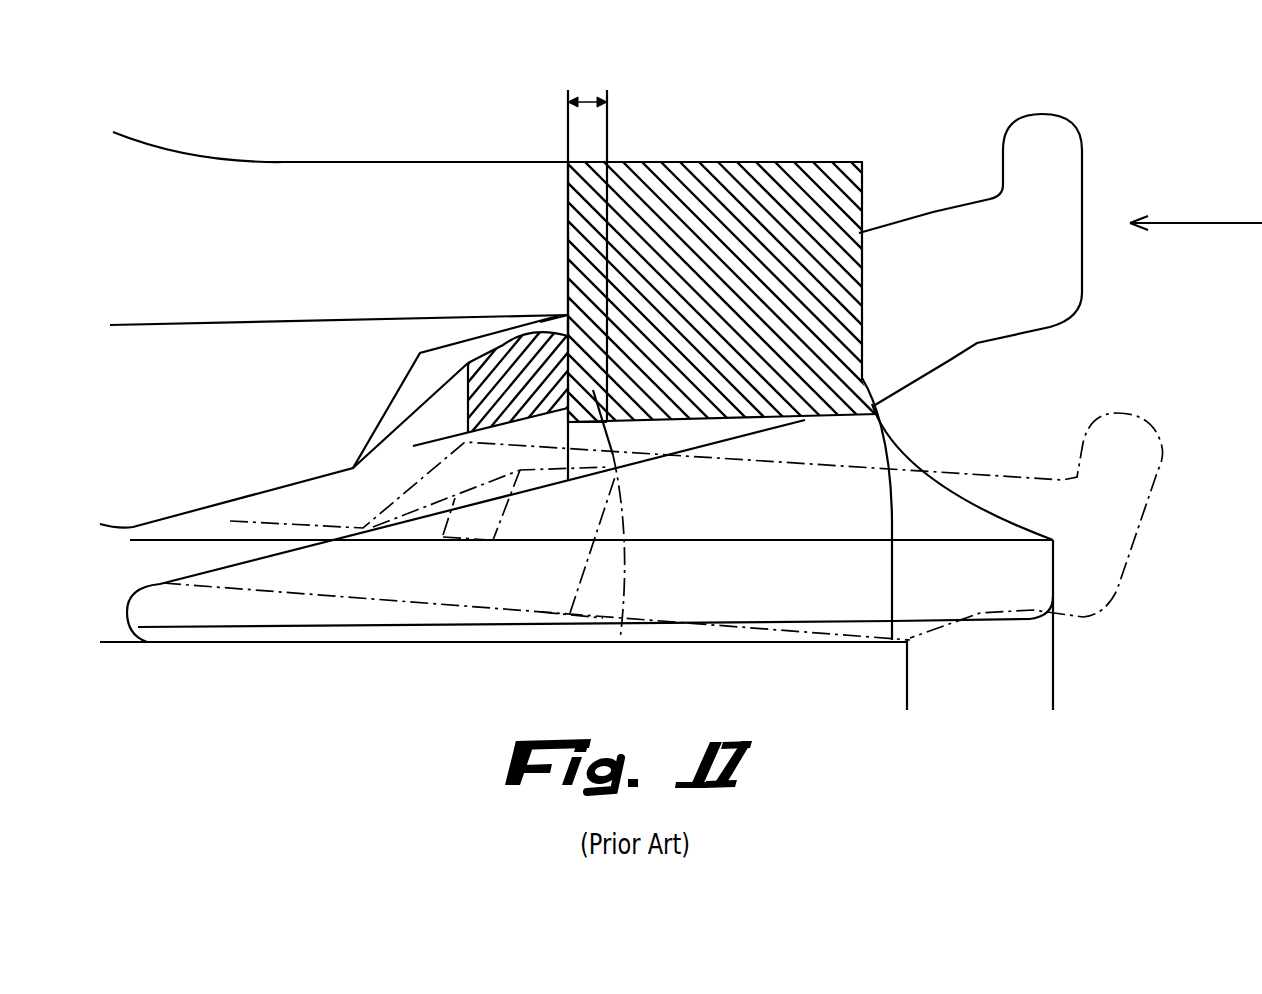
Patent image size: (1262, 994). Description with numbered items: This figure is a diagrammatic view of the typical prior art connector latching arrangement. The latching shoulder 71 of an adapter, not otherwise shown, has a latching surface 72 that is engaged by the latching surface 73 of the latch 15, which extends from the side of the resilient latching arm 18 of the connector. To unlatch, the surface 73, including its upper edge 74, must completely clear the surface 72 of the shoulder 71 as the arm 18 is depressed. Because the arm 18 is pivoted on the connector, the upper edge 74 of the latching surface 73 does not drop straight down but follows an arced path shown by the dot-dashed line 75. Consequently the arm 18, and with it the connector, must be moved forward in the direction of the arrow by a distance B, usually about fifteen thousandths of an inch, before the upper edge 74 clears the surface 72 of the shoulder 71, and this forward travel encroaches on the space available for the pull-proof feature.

The latch 15 is at (485, 382).
The resilient latching arm 18 is at (935, 212).
The latching shoulder 71 is at (676, 192).
The latching surface 72 is at (557, 316).
The latching surface 73 is at (598, 400).
The upper edge 74 is at (570, 328).
The arced path 75 is at (625, 524).
The distance B is at (608, 100).